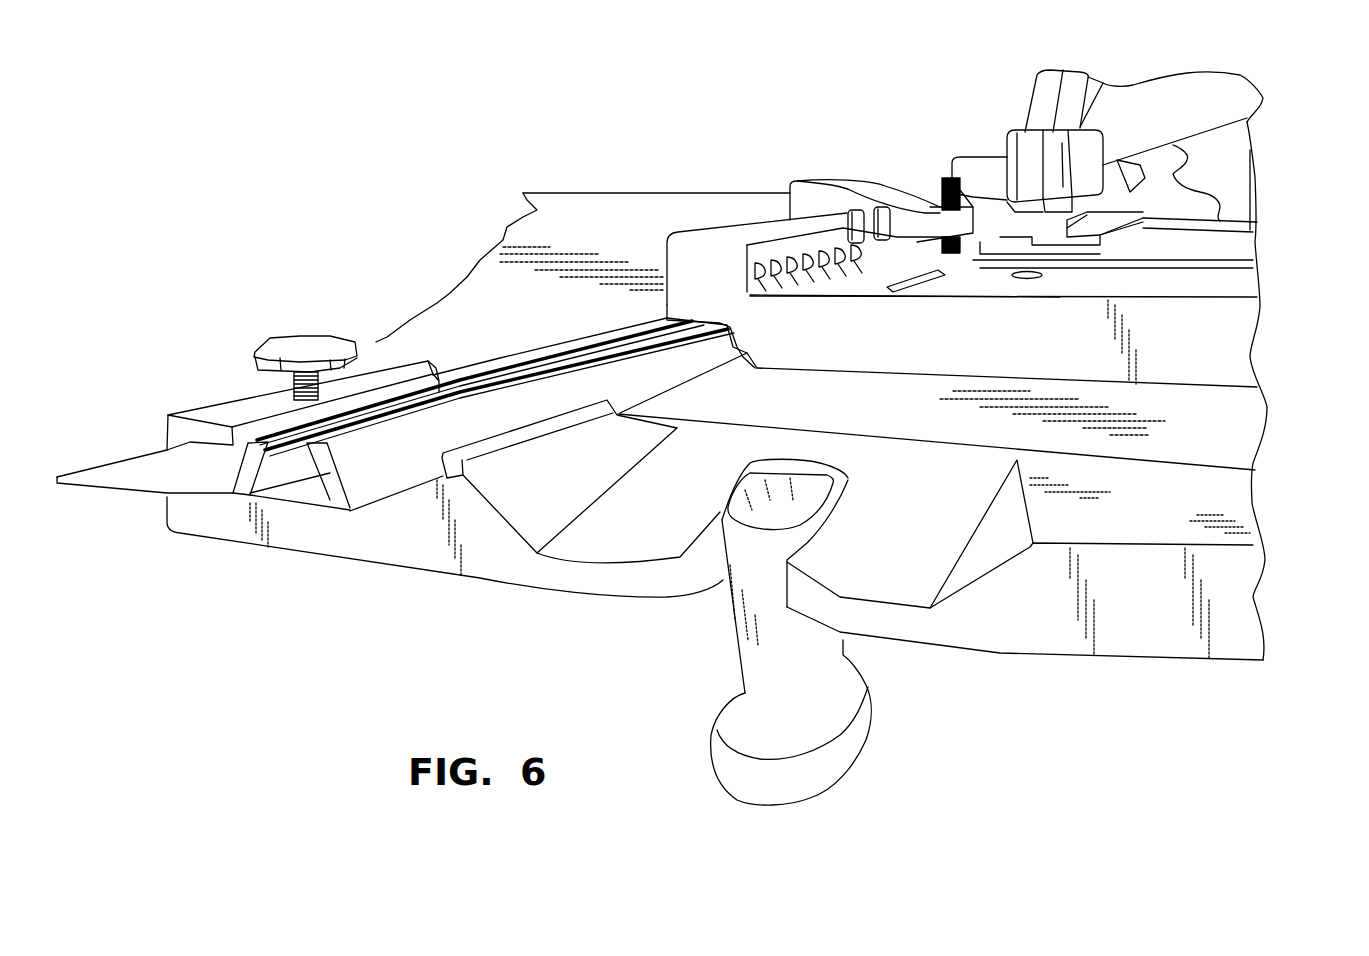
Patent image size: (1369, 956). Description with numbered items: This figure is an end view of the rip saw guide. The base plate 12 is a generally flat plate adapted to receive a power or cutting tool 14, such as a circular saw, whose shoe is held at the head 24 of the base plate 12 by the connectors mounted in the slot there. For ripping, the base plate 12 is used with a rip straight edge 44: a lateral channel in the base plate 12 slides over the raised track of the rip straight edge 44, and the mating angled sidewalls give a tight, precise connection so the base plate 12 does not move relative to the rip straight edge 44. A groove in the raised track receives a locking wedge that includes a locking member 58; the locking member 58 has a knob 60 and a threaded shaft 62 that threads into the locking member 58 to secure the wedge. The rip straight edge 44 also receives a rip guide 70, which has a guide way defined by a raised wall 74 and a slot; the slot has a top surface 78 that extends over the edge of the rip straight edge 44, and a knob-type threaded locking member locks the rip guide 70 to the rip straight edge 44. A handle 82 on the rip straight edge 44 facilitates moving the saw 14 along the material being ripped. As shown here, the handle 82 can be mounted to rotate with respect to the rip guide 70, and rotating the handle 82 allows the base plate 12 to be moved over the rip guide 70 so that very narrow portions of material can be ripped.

The base plate 12 is at (1203, 323).
The power or cutting tool 14 is at (1203, 98).
The head 24 is at (693, 278).
The rip straight edge 44 is at (527, 378).
The locking member 58 is at (266, 315).
The knob 60 is at (312, 338).
The threaded shaft 62 is at (317, 395).
The rip guide 70 is at (1157, 503).
The raised wall 74 is at (488, 455).
The top surface 78 is at (213, 410).
The handle 82 is at (817, 667).